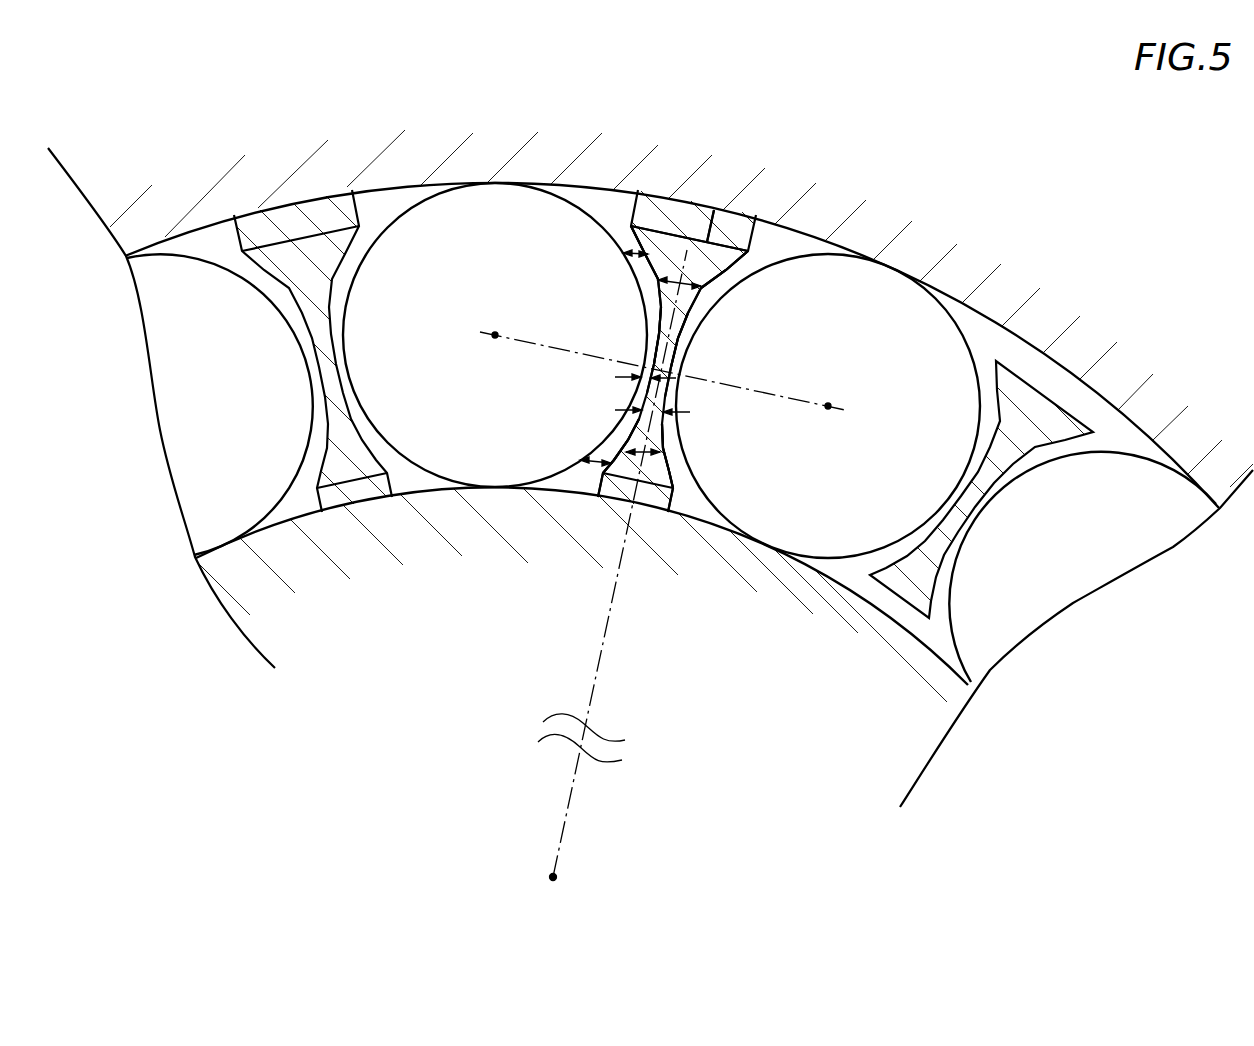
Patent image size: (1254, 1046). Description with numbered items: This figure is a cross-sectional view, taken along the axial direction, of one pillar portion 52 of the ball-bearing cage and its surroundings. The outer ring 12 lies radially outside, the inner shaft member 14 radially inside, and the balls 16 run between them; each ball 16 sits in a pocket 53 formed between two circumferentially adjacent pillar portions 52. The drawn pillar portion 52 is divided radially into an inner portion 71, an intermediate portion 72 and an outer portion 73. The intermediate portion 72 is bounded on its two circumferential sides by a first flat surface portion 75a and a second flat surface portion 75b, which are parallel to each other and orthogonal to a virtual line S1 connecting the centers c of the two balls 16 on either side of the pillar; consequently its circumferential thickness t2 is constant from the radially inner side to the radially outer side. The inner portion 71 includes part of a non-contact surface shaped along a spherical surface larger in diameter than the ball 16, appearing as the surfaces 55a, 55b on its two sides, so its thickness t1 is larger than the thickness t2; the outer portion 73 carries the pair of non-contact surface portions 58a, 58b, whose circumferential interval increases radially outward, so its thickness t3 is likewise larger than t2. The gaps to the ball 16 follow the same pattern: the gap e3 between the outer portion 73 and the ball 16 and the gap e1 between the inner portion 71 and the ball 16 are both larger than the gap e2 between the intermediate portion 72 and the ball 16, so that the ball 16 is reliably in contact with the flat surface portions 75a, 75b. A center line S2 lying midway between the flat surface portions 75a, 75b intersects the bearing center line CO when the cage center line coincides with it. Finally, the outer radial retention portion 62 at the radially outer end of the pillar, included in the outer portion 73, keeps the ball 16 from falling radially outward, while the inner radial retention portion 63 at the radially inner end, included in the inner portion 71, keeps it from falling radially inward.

The outer ring 12 is at (1087, 343).
The inner shaft member 14 is at (817, 617).
The ball 16 is at (487, 215).
The pillar portion 52 is at (663, 233).
The pocket 53 is at (381, 221).
The inner inclined surface 55a is at (660, 468).
The inner inclined surface 55b is at (615, 452).
The non-contact surface portion 58a is at (716, 272).
The non-contact surface portion 58b is at (656, 292).
The outer radial retention portion 62 is at (236, 218).
The inner radial retention portion 63 is at (314, 512).
The inner portion 71 is at (652, 505).
The intermediate portion 72 is at (676, 345).
The outer portion 73 is at (708, 208).
The first flat surface portion 75a is at (702, 316).
The second flat surface portion 75b is at (655, 333).
The center of ball c is at (493, 335).
The bearing center line CO is at (550, 877).
The virtual line S1 is at (803, 409).
The center line S2 is at (568, 808).
The gap e1 is at (585, 462).
The gap e2 is at (638, 380).
The gap e3 is at (622, 252).
The thickness of inner portion t1 is at (663, 437).
The thickness of intermediate portion t2 is at (668, 413).
The thickness of outer portion t3 is at (704, 288).